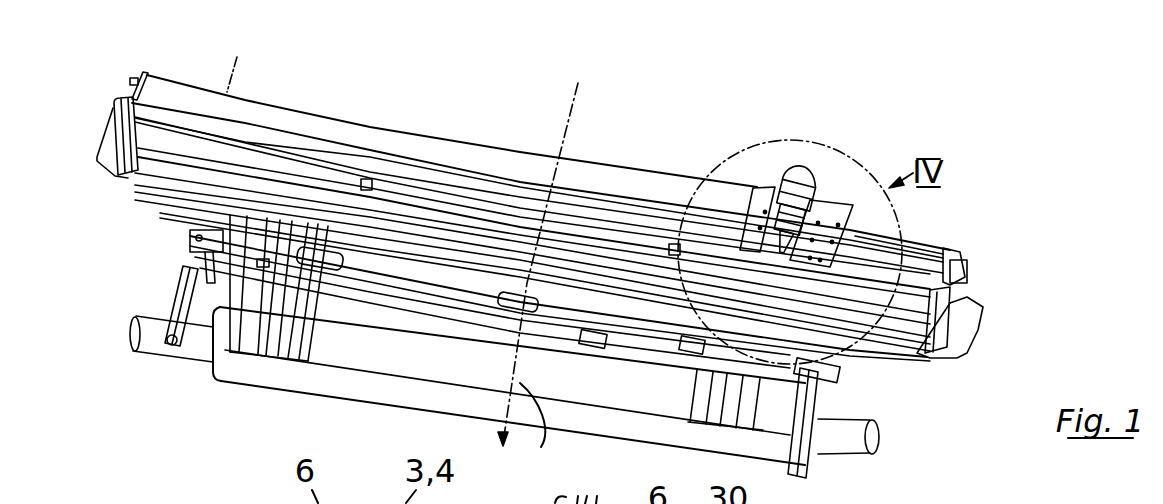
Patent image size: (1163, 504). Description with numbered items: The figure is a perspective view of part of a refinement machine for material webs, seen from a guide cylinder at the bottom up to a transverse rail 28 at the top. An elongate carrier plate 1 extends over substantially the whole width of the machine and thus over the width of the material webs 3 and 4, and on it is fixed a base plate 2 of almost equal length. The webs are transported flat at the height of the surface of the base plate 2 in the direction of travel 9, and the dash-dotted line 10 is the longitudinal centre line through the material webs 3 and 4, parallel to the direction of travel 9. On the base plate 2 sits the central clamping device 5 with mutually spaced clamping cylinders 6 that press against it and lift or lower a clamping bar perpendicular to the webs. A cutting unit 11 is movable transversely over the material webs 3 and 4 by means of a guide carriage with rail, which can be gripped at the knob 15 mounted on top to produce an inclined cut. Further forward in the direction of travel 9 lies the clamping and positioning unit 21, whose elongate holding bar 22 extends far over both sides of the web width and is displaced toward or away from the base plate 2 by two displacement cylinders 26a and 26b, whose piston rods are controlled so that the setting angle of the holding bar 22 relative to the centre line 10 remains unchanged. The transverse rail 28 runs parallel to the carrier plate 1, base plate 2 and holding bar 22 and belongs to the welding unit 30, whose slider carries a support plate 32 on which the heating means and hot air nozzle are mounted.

The carrier plate 1 is at (970, 315).
The base plate 2 is at (137, 187).
The material web 3 is at (684, 170).
The material web 4 is at (541, 152).
The clamping device 5 is at (477, 222).
The clamping cylinder 6 is at (366, 180).
The direction of travel 9 is at (540, 425).
The longitudinal centre line 10 is at (567, 138).
The cutting unit 11 is at (830, 345).
The knob 15 is at (792, 345).
The clamping and positioning unit 21 is at (765, 372).
The holding bar 22 is at (190, 233).
The displacement cylinder 26a is at (810, 460).
The displacement cylinder 26b is at (178, 302).
The transverse rail 28 is at (895, 270).
The welding unit 30 is at (806, 166).
The support plate 32 is at (838, 200).